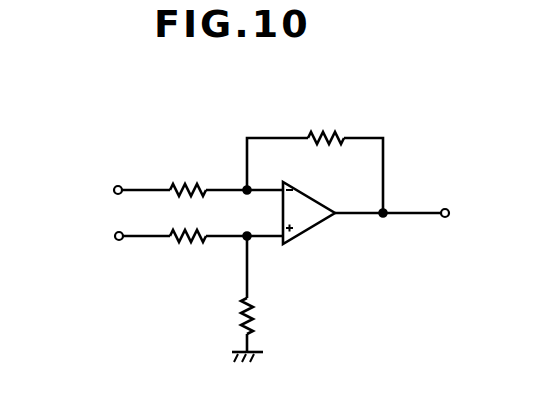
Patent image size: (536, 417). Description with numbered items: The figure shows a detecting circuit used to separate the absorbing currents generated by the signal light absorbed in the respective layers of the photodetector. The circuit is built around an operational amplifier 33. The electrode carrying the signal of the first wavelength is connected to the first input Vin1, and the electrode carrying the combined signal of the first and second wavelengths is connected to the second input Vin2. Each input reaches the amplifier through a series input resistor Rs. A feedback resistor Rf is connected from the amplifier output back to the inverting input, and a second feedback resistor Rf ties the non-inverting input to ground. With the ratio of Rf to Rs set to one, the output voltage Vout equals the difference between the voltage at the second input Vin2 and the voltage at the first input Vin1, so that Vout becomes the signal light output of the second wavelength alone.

The operational amplifier 33 is at (308, 220).
The input resistor Rs is at (226, 211).
The feedback resistor Rf is at (307, 230).
The first input Vin1 is at (107, 188).
The second input Vin2 is at (107, 237).
The output voltage Vout is at (425, 213).